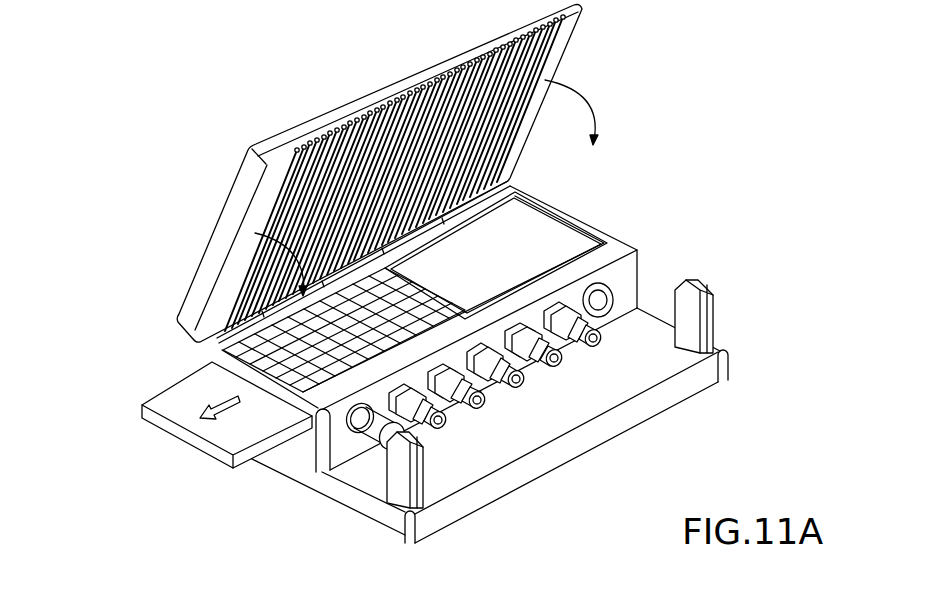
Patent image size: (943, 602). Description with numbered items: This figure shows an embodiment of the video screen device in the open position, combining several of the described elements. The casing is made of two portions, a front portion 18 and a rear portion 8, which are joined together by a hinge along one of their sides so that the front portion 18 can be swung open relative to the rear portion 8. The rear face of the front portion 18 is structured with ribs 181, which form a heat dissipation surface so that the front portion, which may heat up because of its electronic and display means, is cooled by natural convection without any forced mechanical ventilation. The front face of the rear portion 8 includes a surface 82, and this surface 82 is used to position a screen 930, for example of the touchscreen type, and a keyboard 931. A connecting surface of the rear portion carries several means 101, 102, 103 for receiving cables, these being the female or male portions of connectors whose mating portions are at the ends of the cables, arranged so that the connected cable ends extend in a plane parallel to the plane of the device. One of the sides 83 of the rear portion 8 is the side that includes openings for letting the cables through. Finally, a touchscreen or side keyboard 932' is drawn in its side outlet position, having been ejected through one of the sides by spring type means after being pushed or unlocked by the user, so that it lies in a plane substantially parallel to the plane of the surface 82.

The rear portion 8 is at (388, 289).
The front portion 18 is at (412, 174).
The ribs 181 is at (528, 62).
The surface 82 is at (410, 325).
The side 83 is at (435, 522).
The screen 930 is at (563, 243).
The keyboard 931 is at (280, 343).
The screen 932' is at (180, 415).
The means for receiving cables 101 is at (423, 422).
The means for receiving cables 102 is at (480, 397).
The means for receiving cables 103 is at (527, 387).